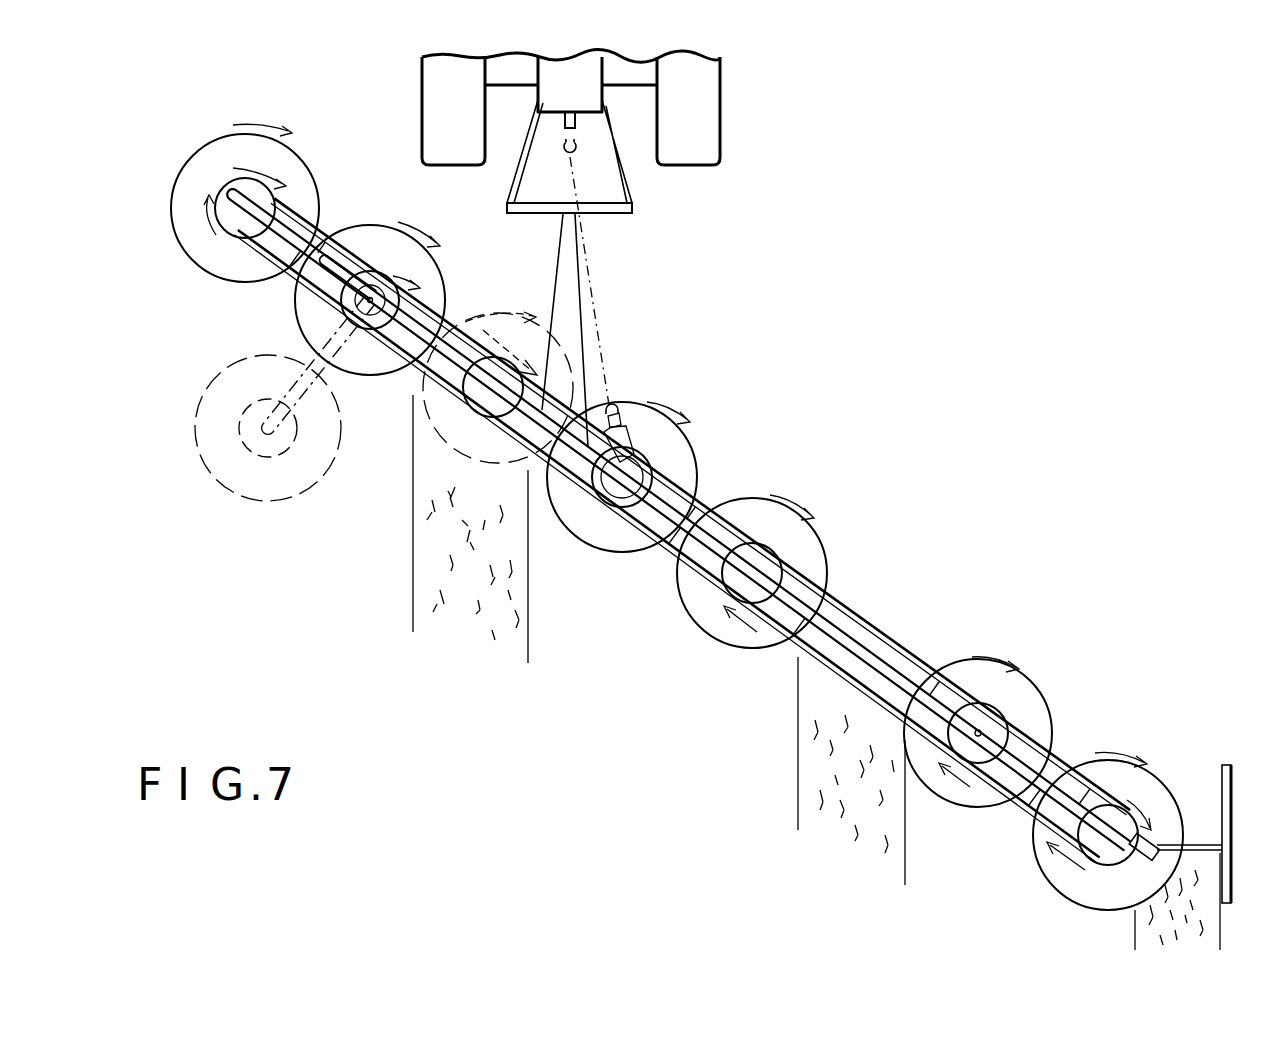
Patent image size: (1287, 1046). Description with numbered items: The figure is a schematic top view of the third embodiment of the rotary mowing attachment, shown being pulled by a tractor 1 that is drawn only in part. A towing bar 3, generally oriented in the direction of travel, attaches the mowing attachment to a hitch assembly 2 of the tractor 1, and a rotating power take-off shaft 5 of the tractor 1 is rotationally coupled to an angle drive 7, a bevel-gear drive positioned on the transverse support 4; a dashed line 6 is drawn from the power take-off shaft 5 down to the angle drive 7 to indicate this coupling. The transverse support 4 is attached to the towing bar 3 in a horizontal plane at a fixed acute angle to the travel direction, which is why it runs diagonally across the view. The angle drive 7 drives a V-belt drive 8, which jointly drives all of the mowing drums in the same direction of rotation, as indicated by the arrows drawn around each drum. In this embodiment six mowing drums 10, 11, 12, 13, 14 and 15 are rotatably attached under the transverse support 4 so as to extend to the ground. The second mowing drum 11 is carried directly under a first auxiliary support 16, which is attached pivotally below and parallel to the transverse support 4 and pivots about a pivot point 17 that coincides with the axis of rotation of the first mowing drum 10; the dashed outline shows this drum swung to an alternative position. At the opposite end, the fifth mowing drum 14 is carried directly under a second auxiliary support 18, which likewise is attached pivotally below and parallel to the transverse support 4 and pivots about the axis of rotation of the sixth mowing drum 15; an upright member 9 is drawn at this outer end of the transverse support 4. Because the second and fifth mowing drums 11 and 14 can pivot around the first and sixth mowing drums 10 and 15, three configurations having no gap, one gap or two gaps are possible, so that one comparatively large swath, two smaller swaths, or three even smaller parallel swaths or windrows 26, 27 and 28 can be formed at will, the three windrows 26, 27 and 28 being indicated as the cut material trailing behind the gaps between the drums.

The tractor 1 is at (721, 117).
The hitch assembly 2 is at (520, 212).
The towing bar 3 is at (557, 266).
The transverse support 4 is at (828, 628).
The power take-off shaft 5 is at (578, 142).
The suspension line 6 is at (598, 325).
The angle drive 7 is at (612, 497).
The V-belt drive 8 is at (878, 630).
The post 9 is at (1223, 792).
The first mowing drum 10 is at (293, 298).
The second mowing drum 11 is at (185, 232).
The mowing drum 12 is at (682, 448).
The mowing drum 13 is at (727, 629).
The fifth mowing drum 14 is at (1090, 773).
The sixth mowing drum 15 is at (1033, 710).
The first auxiliary support 16 is at (318, 230).
The pivot point 17 is at (395, 376).
The second auxiliary support 18 is at (1060, 763).
The swath 26 is at (1135, 925).
The swath 27 is at (800, 775).
The swath 28 is at (415, 545).